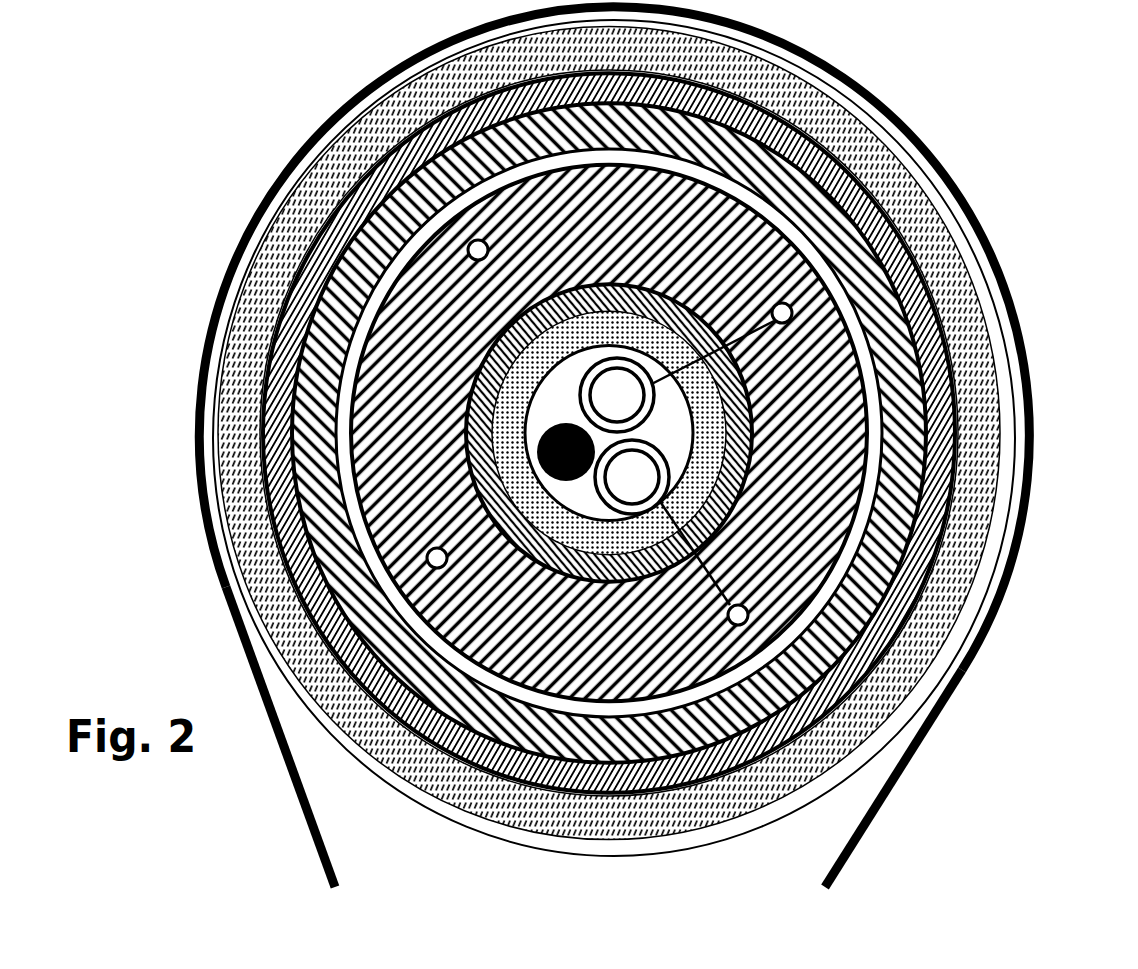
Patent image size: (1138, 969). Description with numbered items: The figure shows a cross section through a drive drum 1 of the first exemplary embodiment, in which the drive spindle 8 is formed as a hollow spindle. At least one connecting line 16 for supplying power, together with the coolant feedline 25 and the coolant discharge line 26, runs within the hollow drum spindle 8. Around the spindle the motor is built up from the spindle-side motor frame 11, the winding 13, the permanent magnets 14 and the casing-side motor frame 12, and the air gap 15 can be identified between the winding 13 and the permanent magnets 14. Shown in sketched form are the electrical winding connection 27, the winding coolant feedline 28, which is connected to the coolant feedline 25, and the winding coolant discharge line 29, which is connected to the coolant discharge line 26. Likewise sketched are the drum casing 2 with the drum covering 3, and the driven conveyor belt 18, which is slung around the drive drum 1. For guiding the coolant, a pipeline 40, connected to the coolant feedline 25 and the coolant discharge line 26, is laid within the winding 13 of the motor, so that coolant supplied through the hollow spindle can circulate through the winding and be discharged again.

The drive drum 1 is at (84, 131).
The drum casing 2 is at (952, 685).
The drum covering 3 is at (928, 735).
The drive spindle 8 is at (665, 522).
The spindle-side motor frame 11 is at (888, 575).
The casing-side motor frame 12 is at (858, 192).
The winding 13 is at (812, 436).
The permanent magnets 14 is at (875, 240).
The air gap 15 is at (872, 383).
The connecting line 16 is at (545, 420).
The driven conveyor belt 18 is at (908, 131).
The coolant feedline 25 is at (622, 405).
The coolant discharge line 26 is at (640, 468).
The electrical winding connection 27 is at (545, 449).
The winding coolant feedline 28 is at (770, 338).
The winding coolant discharge line 29 is at (905, 620).
The pipeline 40 is at (773, 309).